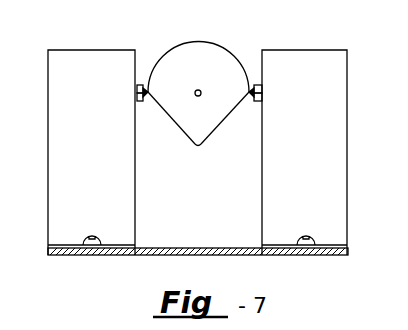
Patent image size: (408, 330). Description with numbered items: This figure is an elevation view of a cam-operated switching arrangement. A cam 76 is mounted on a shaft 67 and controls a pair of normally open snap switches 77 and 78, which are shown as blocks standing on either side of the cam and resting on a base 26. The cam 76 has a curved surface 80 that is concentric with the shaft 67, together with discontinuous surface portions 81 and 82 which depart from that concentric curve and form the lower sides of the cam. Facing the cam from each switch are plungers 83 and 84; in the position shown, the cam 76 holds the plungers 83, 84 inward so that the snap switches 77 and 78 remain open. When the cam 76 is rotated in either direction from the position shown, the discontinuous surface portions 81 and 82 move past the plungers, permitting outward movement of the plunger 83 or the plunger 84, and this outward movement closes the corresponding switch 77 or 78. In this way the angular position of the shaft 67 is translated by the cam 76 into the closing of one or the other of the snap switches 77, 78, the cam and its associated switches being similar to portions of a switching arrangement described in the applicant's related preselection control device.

The base plate 26 is at (184, 240).
The shaft 67 is at (200, 91).
The cam 76 is at (202, 90).
The snap switch 77 is at (49, 146).
The snap switch 78 is at (348, 164).
The curved surface 80 is at (180, 40).
The discontinuous surface portion 81 is at (183, 131).
The discontinuous surface portion 82 is at (222, 121).
The plunger 83 is at (143, 101).
The plunger 84 is at (251, 102).